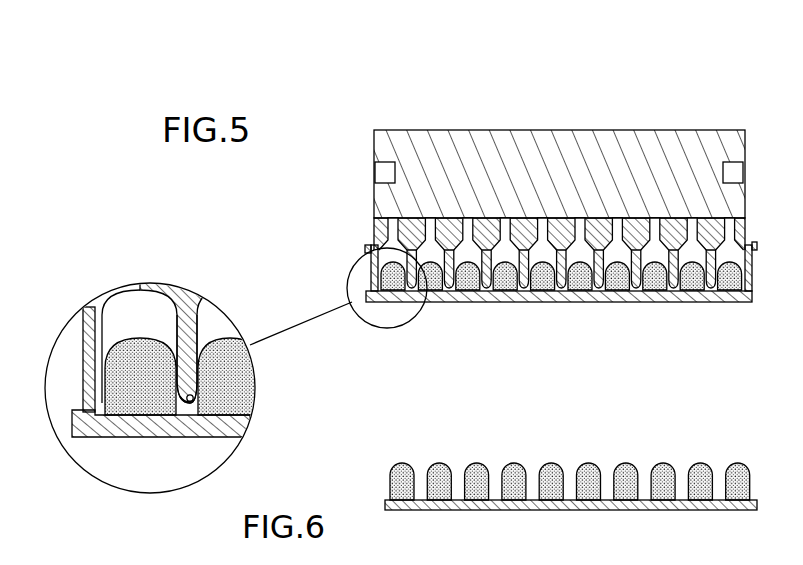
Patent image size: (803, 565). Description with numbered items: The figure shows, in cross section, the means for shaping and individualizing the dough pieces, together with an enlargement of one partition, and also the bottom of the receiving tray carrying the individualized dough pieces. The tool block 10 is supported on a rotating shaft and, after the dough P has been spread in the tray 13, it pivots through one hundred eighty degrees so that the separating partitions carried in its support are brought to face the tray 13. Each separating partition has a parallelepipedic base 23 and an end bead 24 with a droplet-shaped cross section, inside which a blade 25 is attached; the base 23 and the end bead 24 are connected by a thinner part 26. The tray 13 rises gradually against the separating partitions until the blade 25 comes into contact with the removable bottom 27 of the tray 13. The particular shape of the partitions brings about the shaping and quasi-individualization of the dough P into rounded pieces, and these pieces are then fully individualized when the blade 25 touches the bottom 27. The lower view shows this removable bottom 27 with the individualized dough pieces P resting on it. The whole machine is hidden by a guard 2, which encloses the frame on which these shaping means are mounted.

In FIG. 5, the tool block 10 is at (461, 128).
In FIG. 5, the tray 13 is at (372, 254).
In FIG. 5, the parallelepipedic base 23 is at (413, 237).
In FIG. 5, the end bead 24 is at (647, 303).
In FIG. 5, the blade 25 is at (190, 406).
In FIG. 5, the thinner part 26 is at (688, 303).
In FIG. 5, the removable bottom 27 is at (463, 303).
In FIG. 5, the dough P is at (537, 303).
In FIG. 6, the dough P is at (550, 477).
In FIG. 6, the guard 2 is at (557, 510).